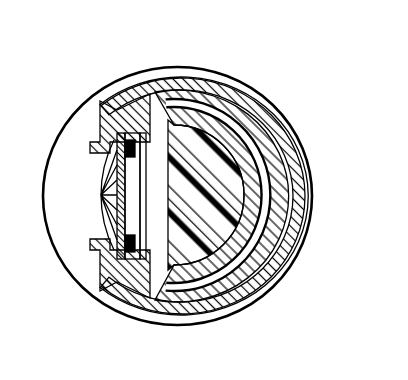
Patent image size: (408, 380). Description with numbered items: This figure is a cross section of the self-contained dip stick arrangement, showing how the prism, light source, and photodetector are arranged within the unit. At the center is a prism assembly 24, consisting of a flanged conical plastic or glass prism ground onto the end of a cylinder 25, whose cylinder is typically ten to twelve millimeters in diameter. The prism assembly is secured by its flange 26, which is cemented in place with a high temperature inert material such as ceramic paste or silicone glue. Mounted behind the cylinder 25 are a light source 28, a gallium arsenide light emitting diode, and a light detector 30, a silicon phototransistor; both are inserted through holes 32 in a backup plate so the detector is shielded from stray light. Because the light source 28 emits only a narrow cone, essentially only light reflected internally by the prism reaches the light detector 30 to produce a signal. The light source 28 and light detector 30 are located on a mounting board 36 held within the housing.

The prism assembly 24 is at (104, 204).
The cylinder 25 is at (141, 240).
The flange 26 is at (112, 122).
The light source 28 is at (142, 112).
The light detector 30 is at (116, 284).
The holes 32 is at (101, 195).
The mounting board 36 is at (183, 133).